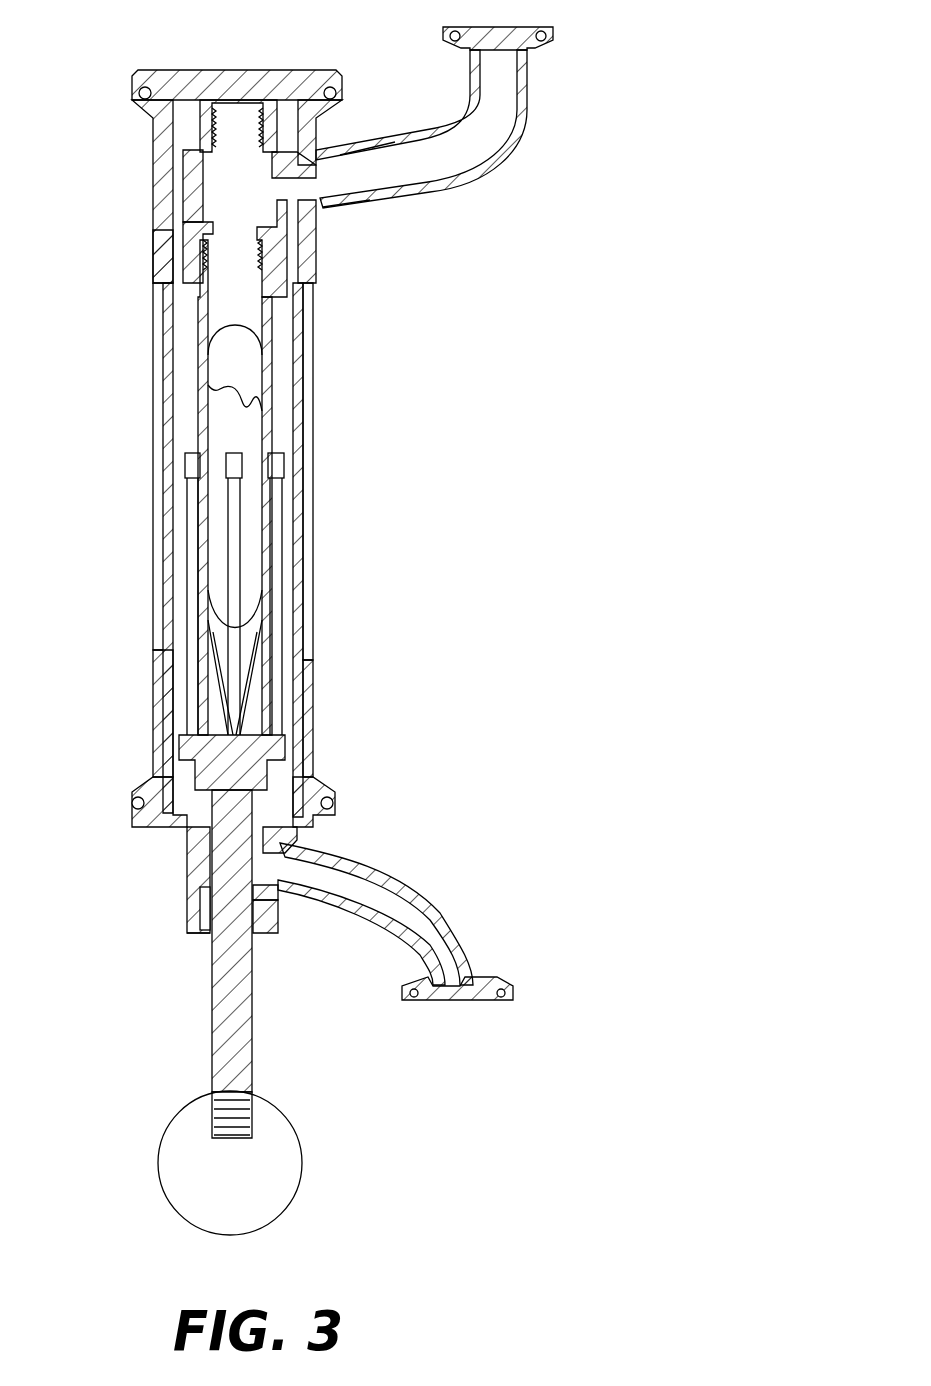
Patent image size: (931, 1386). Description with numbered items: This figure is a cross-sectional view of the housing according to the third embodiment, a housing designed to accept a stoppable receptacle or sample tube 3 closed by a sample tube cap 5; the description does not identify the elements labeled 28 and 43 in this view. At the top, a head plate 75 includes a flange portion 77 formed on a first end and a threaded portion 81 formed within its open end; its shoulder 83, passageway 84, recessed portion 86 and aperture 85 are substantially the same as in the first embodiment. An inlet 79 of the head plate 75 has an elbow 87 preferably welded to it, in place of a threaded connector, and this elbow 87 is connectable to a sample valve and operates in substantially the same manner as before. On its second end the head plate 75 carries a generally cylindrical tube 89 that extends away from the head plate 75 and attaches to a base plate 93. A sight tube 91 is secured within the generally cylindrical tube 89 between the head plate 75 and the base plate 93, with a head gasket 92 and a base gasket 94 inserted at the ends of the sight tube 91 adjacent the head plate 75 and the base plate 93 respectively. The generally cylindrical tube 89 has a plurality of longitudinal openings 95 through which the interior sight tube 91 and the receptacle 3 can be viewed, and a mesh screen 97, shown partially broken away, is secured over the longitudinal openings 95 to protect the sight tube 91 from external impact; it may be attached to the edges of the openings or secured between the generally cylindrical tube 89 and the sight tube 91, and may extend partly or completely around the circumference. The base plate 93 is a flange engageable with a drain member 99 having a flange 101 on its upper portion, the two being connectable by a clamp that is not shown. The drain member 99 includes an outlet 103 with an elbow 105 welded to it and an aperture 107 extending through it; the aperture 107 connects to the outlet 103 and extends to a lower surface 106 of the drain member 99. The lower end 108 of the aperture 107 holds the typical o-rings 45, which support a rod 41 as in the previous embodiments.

The sample tube 3 is at (272, 402).
The sample tube cap 5 is at (308, 100).
The housing 28 is at (306, 318).
The rod 41 is at (255, 1043).
The knob 43 is at (302, 1162).
The o-rings 45 is at (280, 897).
The head plate 75 is at (153, 253).
The flange portion 77 is at (132, 98).
The inlet 79 is at (385, 145).
The threaded portion 81 is at (181, 86).
The shoulder 83 is at (300, 141).
The passageway 84 is at (183, 212).
The aperture 85 is at (328, 202).
The recessed portion 86 is at (185, 152).
The elbow 87 is at (520, 128).
The generally cylindrical tube 89 is at (165, 676).
The sight tube 91 is at (295, 510).
The head gasket 92 is at (300, 276).
The base plate 93 is at (298, 752).
The base gasket 94 is at (330, 832).
The longitudinal openings 95 is at (160, 468).
The mesh screen 97 is at (215, 355).
The drain member 99 is at (188, 858).
The flange 101 is at (132, 805).
The outlet 103 is at (290, 847).
The elbow 105 is at (450, 905).
The lower surface 106 is at (275, 935).
The aperture 107 is at (202, 887).
The lower end 108 is at (200, 933).